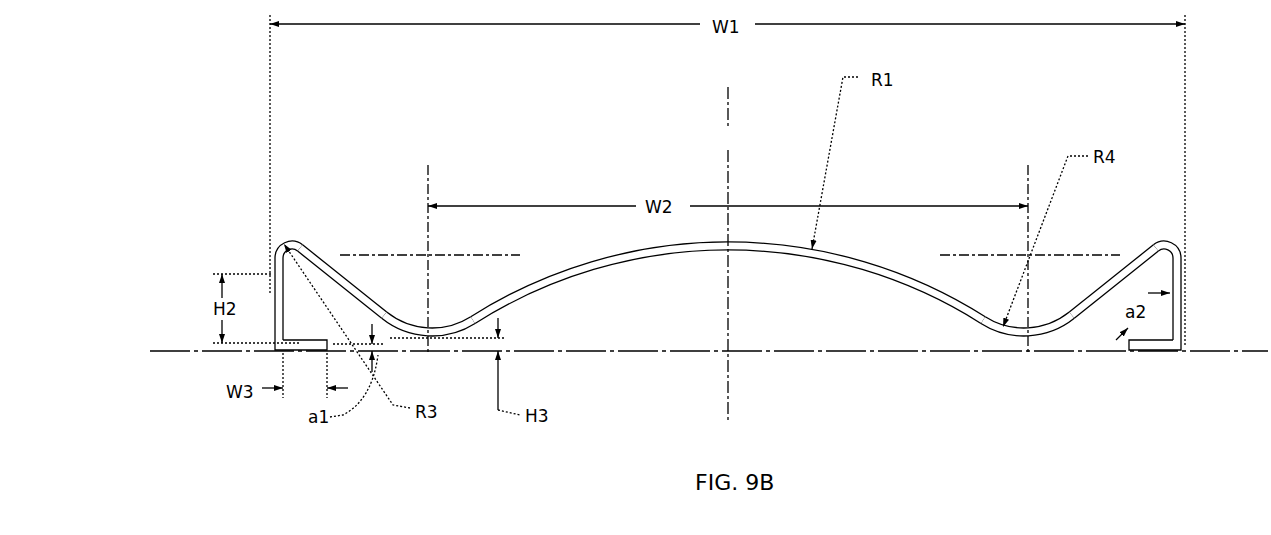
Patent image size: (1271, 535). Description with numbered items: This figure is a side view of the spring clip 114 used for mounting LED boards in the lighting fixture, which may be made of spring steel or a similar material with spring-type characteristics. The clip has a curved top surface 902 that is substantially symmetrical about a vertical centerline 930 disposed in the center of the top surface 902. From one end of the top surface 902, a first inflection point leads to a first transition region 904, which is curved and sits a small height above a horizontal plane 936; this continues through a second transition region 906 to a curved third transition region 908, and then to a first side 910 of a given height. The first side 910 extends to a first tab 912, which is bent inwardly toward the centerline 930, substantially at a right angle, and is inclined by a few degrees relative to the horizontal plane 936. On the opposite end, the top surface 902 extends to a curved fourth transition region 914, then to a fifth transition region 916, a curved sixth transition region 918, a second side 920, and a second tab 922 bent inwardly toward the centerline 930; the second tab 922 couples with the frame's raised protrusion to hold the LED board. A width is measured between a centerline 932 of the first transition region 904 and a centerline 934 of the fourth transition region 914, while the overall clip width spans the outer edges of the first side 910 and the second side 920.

The spring clip 114 is at (213, 161).
The top surface 902 is at (884, 270).
The first transition region 904 is at (406, 334).
The second transition region 906 is at (350, 289).
The third transition region 908 is at (298, 241).
The first side 910 is at (274, 290).
The first tab 912 is at (298, 344).
The fourth transition region 914 is at (1010, 334).
The fifth transition region 916 is at (1133, 263).
The sixth transition region 918 is at (1158, 246).
The second side 920 is at (1184, 296).
The second tab 922 is at (1157, 352).
The centerline 930 is at (727, 108).
The centerline of the first transition region 932 is at (427, 175).
The centerline of the fourth transition region 934 is at (1027, 175).
The horizontal plane 936 is at (882, 352).